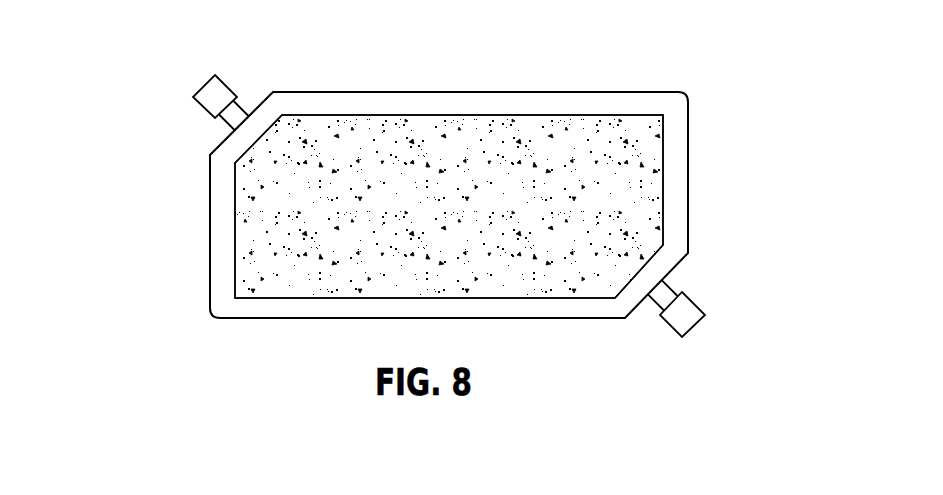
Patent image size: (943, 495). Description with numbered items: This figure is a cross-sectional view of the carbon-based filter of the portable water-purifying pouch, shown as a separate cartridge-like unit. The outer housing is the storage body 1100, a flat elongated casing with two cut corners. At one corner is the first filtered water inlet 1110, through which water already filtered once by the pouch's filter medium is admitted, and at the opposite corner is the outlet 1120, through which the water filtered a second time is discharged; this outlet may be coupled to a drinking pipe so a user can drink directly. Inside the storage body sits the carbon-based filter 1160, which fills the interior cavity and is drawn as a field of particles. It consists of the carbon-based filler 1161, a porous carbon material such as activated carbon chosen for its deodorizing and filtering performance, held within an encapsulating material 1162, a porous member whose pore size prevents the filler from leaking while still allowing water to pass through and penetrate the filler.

The pouch-type secondary battery case 1100 is at (737, 175).
The first filtered water inlet 1110 is at (207, 97).
The second electrode terminal (lead tab) 1120 is at (738, 312).
The electrode assembly accommodating region 1160 is at (362, 206).
The electrode active material particles 1161 is at (250, 212).
The accommodating region boundary / separator layer 1162 is at (235, 258).